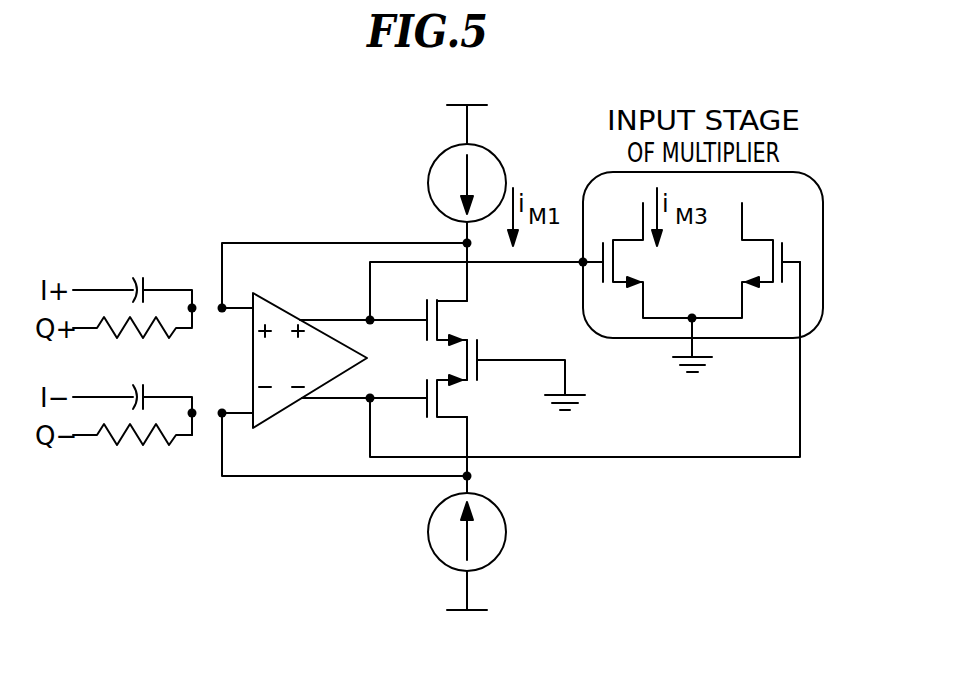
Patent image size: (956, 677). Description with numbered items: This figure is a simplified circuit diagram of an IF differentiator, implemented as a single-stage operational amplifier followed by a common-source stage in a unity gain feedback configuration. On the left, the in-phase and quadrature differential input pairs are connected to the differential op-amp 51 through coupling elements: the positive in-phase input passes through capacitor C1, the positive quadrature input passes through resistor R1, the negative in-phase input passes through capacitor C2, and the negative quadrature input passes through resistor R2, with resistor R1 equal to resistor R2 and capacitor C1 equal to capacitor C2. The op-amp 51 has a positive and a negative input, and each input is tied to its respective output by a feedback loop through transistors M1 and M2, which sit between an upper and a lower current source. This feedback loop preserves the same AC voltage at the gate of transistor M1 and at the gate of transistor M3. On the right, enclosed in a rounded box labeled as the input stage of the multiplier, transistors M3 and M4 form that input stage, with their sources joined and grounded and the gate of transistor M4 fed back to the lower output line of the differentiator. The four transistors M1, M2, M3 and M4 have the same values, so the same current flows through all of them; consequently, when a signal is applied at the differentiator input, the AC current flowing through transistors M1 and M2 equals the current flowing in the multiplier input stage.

The differential op-amp 51 is at (278, 306).
The capacitor C1 is at (132, 290).
The capacitor C2 is at (132, 397).
The resistor R1 is at (132, 343).
The resistor R2 is at (132, 450).
The transistor M1 is at (471, 322).
The transistor M2 is at (471, 396).
The transistor M3 is at (637, 260).
The transistor M4 is at (746, 260).